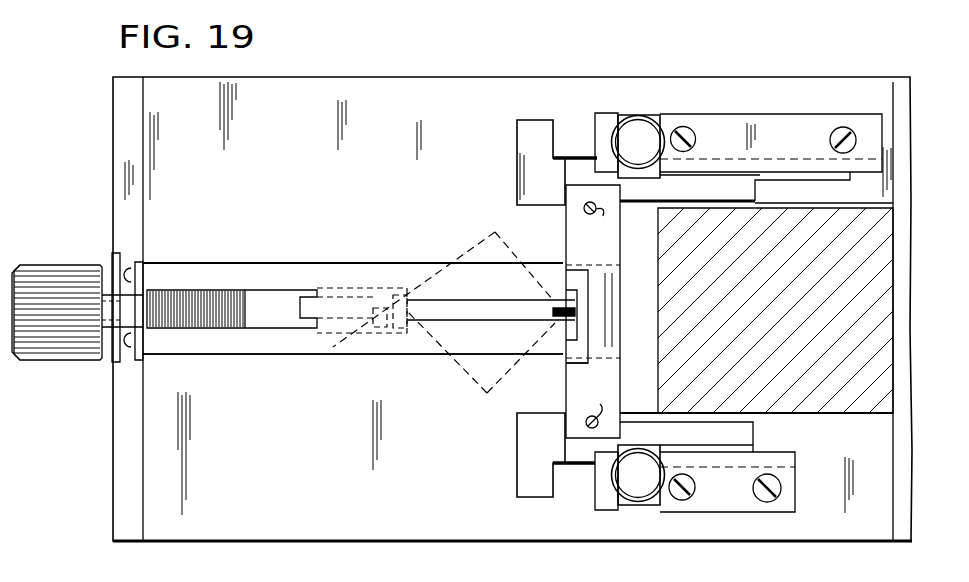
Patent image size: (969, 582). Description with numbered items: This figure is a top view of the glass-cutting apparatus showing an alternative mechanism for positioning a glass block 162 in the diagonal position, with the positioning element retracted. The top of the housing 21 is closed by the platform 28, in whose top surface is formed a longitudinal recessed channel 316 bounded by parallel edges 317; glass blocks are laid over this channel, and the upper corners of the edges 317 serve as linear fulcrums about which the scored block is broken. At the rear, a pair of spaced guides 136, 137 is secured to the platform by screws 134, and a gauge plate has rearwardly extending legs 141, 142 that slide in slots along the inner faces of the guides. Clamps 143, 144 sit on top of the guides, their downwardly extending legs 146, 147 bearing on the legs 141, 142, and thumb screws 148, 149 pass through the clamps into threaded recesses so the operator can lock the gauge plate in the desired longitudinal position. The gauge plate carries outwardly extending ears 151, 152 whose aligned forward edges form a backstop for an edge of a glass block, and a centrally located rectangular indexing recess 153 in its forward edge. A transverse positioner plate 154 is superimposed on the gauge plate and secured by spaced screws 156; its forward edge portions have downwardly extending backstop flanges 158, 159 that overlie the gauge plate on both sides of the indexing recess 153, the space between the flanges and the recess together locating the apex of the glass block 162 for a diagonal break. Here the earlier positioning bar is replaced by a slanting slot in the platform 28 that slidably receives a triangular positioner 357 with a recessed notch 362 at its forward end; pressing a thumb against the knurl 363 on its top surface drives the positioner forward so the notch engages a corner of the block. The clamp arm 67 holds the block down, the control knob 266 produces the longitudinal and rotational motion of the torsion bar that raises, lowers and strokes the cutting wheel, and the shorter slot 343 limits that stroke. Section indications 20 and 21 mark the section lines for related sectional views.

The section line 20- 20 is at (127, 350).
The housing 21 is at (147, 581).
The platform 28 is at (333, 518).
The sliding clamp arm 67 is at (872, 400).
The screws 134 is at (690, 130).
The guide 136 is at (777, 118).
The guide 137 is at (783, 505).
The leg 141 is at (757, 192).
The leg 142 is at (743, 440).
The clamp 143 is at (652, 115).
The clamp 144 is at (620, 505).
The leg 146 is at (663, 175).
The leg 147 is at (657, 443).
The thumb screw 148 is at (613, 117).
The thumb screw 149 is at (622, 478).
The ear 151 is at (517, 122).
The ear 152 is at (523, 468).
The indexing recess 153 is at (577, 297).
The positioner plate 154 is at (636, 256).
The screws 156 is at (592, 315).
The backstop flange 158 is at (565, 235).
The backstop flange 159 is at (565, 373).
The glass block 162 is at (459, 258).
The control knob 266 is at (50, 266).
The recessed channel 316 is at (253, 343).
The edges 317 is at (247, 262).
The slot 343 is at (455, 316).
The positioner 357 is at (262, 292).
The recessed notch 362 is at (312, 310).
The knurl 363 is at (192, 297).